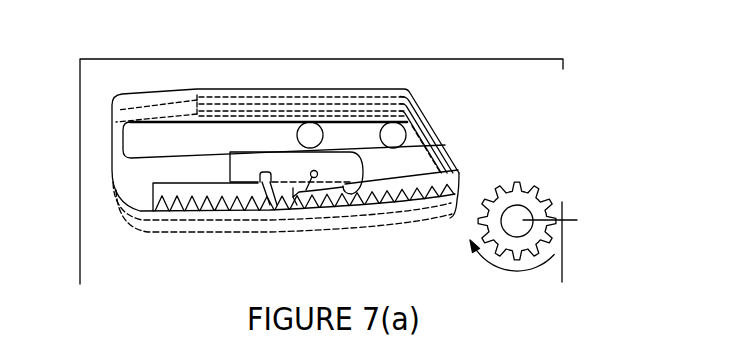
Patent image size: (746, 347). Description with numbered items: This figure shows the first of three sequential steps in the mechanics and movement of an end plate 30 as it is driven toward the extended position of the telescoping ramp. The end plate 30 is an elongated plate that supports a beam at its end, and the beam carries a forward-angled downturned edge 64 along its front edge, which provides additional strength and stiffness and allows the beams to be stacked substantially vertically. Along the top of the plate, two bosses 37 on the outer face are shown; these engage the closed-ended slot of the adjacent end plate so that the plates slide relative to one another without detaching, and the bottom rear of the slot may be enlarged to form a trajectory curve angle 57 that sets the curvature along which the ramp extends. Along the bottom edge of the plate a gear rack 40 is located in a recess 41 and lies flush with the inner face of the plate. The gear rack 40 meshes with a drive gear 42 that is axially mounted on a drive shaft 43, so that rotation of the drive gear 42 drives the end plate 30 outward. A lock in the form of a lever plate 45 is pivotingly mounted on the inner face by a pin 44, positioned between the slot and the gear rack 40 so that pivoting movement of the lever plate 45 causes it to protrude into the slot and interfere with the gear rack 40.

The end plate 30 is at (110, 102).
The trajectory curve angle 57 is at (152, 153).
The downturned edge 64 is at (447, 142).
The bosses 37 is at (307, 135).
The lever plate 45 is at (247, 168).
The pin 44 is at (313, 178).
The gear rack 40 is at (170, 193).
The recess 41 is at (223, 207).
The drive gear 42 is at (537, 192).
The drive shaft 43 is at (577, 220).